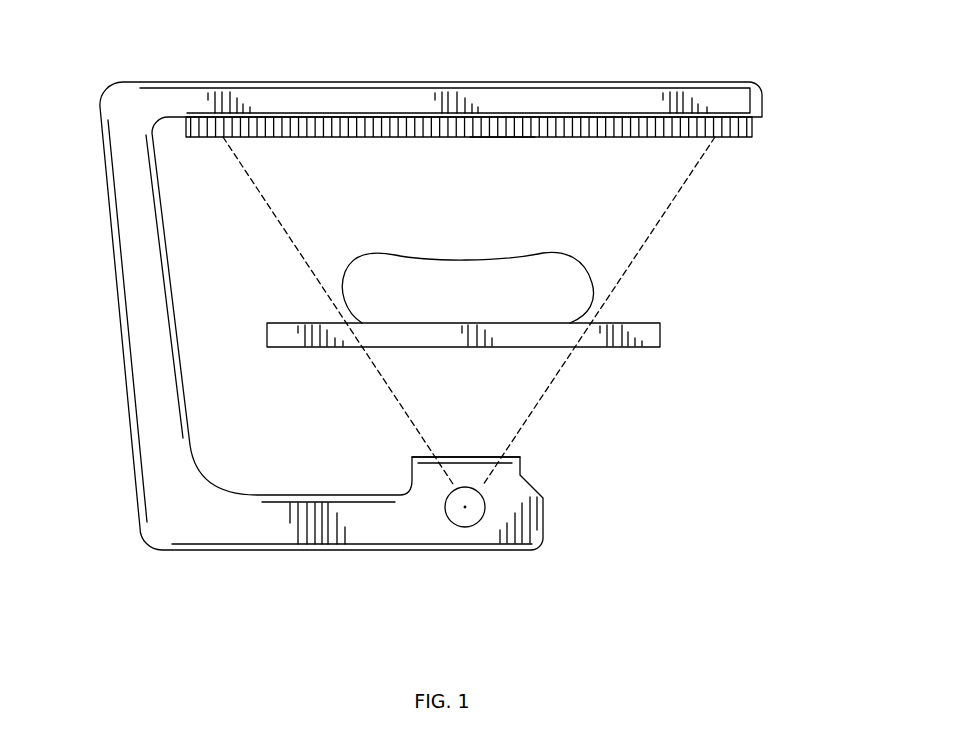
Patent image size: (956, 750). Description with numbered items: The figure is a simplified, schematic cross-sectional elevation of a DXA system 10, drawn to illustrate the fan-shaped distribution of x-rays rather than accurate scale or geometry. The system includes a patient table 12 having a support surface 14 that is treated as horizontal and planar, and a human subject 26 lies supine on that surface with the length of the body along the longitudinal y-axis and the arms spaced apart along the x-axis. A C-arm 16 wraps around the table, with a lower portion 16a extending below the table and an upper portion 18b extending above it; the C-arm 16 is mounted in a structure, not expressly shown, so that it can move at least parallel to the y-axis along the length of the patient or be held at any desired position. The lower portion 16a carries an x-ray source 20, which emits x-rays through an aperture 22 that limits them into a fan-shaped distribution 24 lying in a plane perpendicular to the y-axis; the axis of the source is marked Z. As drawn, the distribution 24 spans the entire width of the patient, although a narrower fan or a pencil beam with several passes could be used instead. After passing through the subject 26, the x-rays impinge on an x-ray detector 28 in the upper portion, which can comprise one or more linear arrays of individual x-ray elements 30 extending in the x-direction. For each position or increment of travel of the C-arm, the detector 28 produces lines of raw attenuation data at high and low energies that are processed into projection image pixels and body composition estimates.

The DXA system 10 is at (740, 246).
The patient table 12 is at (292, 347).
The support surface 14 is at (650, 323).
The C-arm 16 is at (126, 262).
The lower portion of the C-arm 16a is at (222, 550).
The top arm of housing 18b is at (145, 82).
The x-ray source 20 is at (480, 505).
The aperture 22 is at (512, 456).
The fan-shaped distribution 24 is at (262, 197).
The human subject 26 is at (468, 258).
The x-ray detector 28 is at (318, 140).
The x-ray elements 30 is at (470, 136).
The pivot axis Z is at (465, 507).